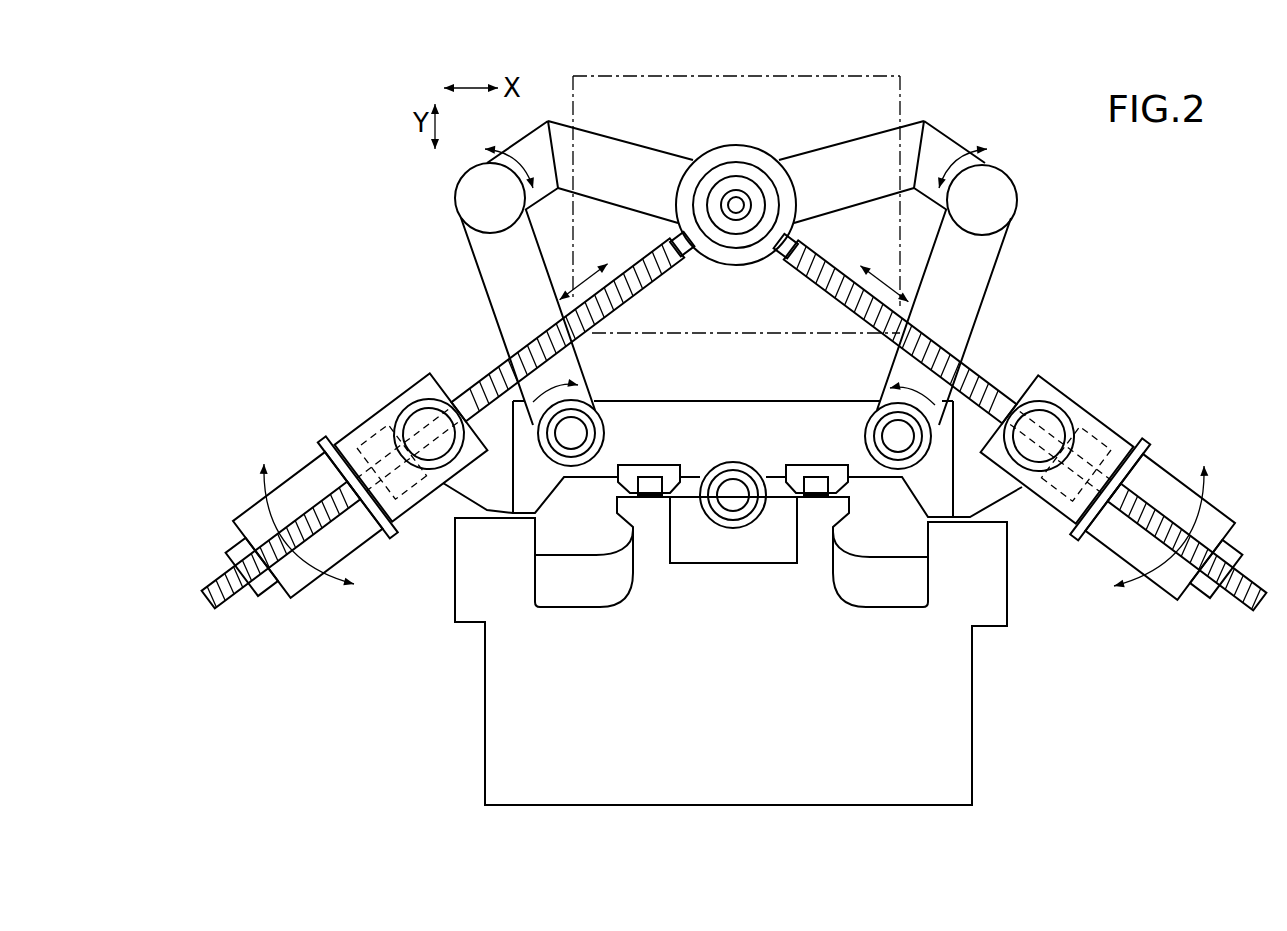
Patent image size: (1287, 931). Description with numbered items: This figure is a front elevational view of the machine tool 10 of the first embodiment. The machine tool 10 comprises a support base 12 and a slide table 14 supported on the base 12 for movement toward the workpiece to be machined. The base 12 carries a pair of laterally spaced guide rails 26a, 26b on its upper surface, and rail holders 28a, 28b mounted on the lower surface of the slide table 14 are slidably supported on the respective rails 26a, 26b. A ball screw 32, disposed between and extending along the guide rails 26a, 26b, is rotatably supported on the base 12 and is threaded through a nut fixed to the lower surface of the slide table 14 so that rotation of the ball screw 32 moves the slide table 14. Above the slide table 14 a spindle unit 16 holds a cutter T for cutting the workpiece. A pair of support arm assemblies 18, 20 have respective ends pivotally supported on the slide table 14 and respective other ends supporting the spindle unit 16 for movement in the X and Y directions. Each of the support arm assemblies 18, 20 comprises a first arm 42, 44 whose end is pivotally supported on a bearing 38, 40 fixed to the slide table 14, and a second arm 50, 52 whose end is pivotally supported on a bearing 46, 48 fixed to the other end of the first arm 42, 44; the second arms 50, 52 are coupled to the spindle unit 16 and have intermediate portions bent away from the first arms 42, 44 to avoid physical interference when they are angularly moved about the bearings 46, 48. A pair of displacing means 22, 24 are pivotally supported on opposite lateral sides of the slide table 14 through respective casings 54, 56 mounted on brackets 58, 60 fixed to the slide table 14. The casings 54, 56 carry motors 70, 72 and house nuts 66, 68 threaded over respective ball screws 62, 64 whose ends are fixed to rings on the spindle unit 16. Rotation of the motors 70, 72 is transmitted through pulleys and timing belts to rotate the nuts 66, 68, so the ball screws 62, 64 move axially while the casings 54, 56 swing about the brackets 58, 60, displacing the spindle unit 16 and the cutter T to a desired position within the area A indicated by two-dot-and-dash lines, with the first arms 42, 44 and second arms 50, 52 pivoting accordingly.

The machine tool 10 is at (1020, 122).
The support base 12 is at (958, 702).
The slide table 14 is at (723, 411).
The spindle unit 16 is at (748, 152).
The support arm assembly 18 is at (1028, 216).
The support arm assembly 20 is at (418, 212).
The displacing means 22 is at (1121, 390).
The displacing means 24 is at (350, 389).
The guide rail 26a is at (818, 497).
The guide rail 26b is at (650, 497).
The rail holder 28a is at (818, 470).
The rail holder 28b is at (653, 468).
The ball screw 32 is at (733, 488).
The bearing 38 is at (892, 430).
The bearing 40 is at (573, 431).
The first arm 42 is at (976, 281).
The first arm 44 is at (492, 267).
The bearing 46 is at (1002, 188).
The bearing 48 is at (475, 193).
The second arm 50 is at (843, 163).
The second arm 52 is at (630, 167).
The casing 54 is at (1113, 440).
The casing 56 is at (397, 407).
The bracket 58 is at (992, 490).
The bracket 60 is at (470, 487).
The ball screw 62 is at (834, 300).
The ball screw 64 is at (643, 296).
The nut 66 is at (1093, 407).
The nut 68 is at (357, 450).
The motor 70 is at (1198, 517).
The motor 72 is at (262, 520).
The area A is at (903, 78).
The cutter T is at (736, 213).